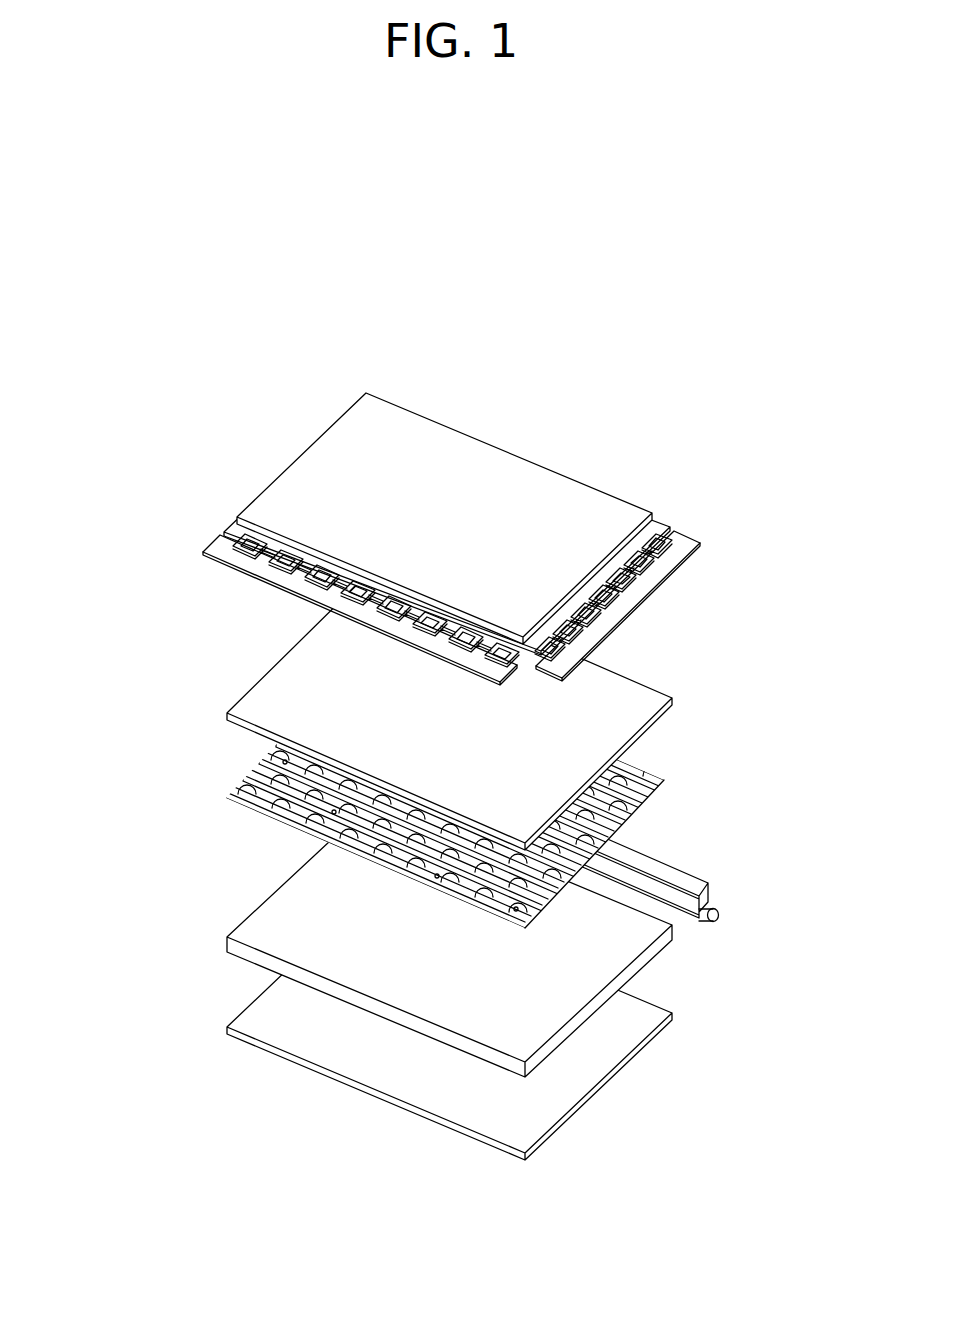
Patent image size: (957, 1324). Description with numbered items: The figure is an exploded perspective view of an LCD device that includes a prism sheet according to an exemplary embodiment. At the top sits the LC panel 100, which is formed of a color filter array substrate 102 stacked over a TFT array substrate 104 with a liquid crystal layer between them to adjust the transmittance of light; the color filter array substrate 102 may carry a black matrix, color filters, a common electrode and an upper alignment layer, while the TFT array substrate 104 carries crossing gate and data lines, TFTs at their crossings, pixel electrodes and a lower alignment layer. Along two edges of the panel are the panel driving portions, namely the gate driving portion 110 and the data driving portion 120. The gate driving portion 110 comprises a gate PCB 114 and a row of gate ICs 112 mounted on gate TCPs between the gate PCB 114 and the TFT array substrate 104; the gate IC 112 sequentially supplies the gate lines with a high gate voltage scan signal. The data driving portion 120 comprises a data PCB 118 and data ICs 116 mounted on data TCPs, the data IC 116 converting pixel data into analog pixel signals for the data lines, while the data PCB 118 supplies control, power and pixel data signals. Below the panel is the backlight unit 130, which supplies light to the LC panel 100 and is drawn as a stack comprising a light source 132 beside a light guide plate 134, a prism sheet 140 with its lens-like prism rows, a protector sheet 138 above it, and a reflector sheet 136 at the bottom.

The LC panel 100 is at (551, 524).
The color filter array substrate 102 is at (635, 513).
The TFT array substrate 104 is at (657, 527).
The gate driving portion 110 is at (709, 606).
The gate IC 112 is at (667, 545).
The gate PCB 114 is at (673, 567).
The data driving portion 120 is at (264, 598).
The data IC 116 is at (210, 562).
The data PCB 118 is at (222, 548).
The backlight unit 130 is at (554, 864).
The light source 132 is at (665, 887).
The light guide plate 134 is at (625, 955).
The reflector sheet 136 is at (663, 1012).
The protector sheet 138 is at (519, 709).
The prism sheet 140 is at (643, 757).